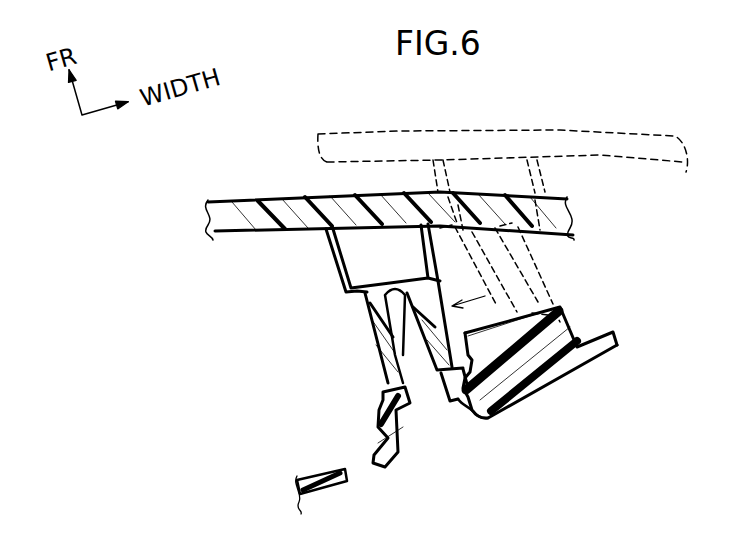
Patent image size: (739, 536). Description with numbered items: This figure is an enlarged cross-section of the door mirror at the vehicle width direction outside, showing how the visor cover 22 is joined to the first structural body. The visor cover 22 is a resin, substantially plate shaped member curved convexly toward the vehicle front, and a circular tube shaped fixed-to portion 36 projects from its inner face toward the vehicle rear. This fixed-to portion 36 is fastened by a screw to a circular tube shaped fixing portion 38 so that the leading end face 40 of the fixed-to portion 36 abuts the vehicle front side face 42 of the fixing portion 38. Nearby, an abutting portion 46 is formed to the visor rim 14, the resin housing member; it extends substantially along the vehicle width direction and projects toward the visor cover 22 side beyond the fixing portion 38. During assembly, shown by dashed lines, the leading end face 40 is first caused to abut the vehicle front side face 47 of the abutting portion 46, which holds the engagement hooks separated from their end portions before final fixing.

The visor cover 22 is at (271, 208).
The vehicle front side face 42 is at (398, 368).
The fixed-to portion 36 is at (387, 357).
The fixing portion 38 is at (403, 426).
The leading end face 40 is at (462, 398).
The abutting portion 46 is at (562, 324).
The visor rim 14 is at (546, 389).
The vehicle front side face 47 is at (478, 323).